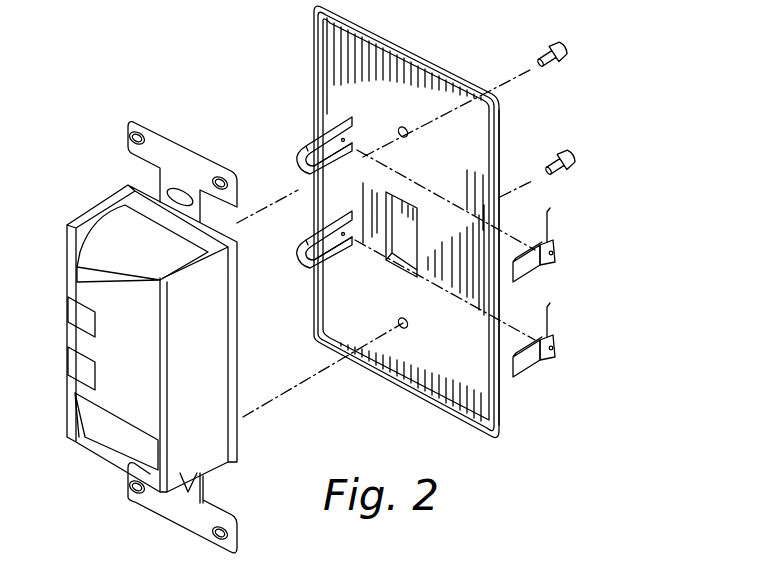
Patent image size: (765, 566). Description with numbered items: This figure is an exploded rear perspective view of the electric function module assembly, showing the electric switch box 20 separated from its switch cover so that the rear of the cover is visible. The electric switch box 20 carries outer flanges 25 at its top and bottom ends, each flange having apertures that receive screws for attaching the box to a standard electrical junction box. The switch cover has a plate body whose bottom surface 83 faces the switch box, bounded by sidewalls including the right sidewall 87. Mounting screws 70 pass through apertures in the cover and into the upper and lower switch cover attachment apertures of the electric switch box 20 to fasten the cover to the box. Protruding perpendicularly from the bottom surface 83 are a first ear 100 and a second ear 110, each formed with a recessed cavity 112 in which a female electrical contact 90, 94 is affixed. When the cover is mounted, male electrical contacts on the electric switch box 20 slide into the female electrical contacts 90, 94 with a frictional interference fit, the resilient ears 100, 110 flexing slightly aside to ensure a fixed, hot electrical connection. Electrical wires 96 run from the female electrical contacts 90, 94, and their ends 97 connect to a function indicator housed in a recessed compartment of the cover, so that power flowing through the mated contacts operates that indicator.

The electric switch box 20 is at (97, 210).
The outer flanges 25 is at (147, 121).
The mounting screw 70 is at (556, 67).
The bottom surface 83 is at (340, 70).
The right sidewall 87 is at (503, 146).
The female electrical contact 90 is at (531, 269).
The female electrical contact 94 is at (528, 368).
The electrical wires 96 is at (553, 231).
The ends 97 is at (552, 214).
The first ear 100 is at (308, 140).
The second ear 110 is at (310, 248).
The recessed cavity 112 is at (312, 177).